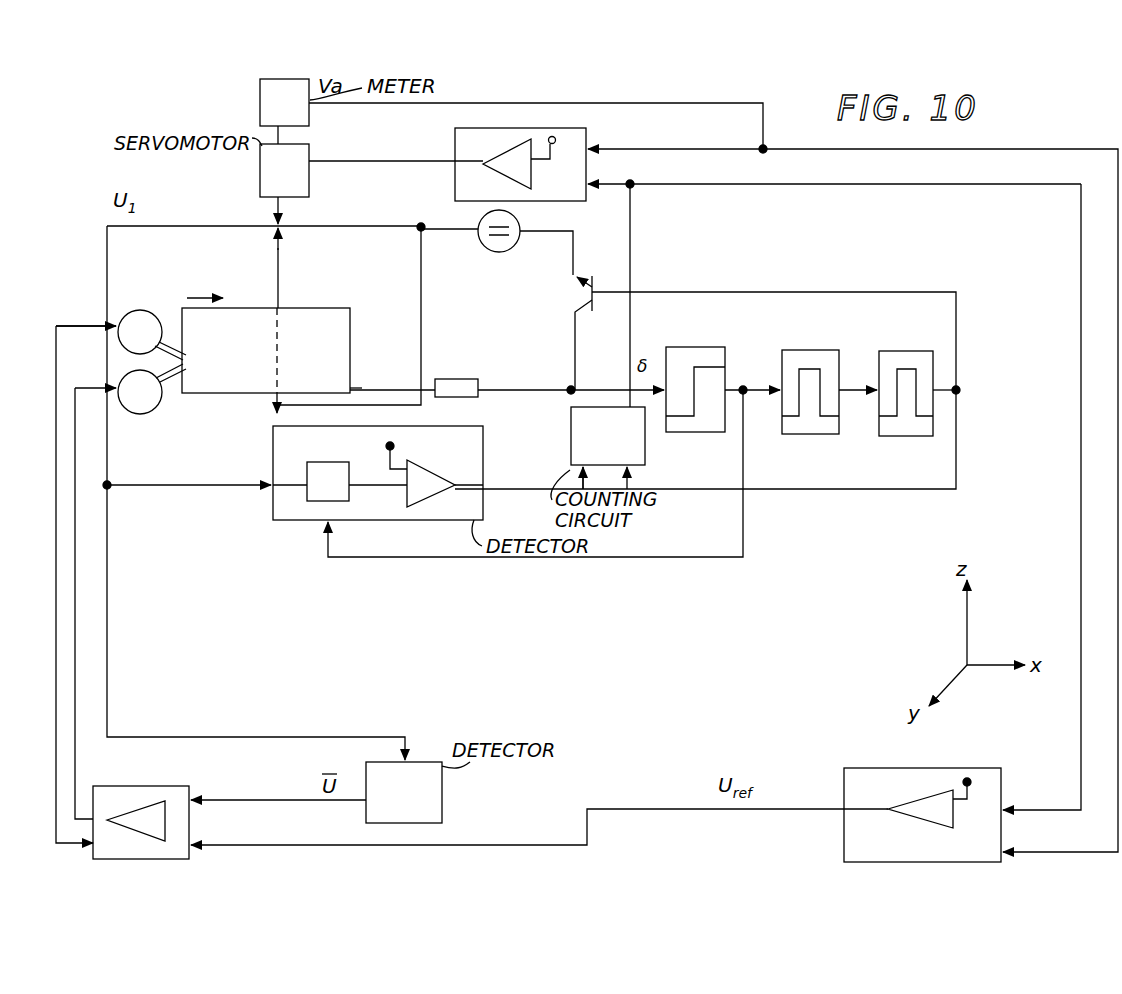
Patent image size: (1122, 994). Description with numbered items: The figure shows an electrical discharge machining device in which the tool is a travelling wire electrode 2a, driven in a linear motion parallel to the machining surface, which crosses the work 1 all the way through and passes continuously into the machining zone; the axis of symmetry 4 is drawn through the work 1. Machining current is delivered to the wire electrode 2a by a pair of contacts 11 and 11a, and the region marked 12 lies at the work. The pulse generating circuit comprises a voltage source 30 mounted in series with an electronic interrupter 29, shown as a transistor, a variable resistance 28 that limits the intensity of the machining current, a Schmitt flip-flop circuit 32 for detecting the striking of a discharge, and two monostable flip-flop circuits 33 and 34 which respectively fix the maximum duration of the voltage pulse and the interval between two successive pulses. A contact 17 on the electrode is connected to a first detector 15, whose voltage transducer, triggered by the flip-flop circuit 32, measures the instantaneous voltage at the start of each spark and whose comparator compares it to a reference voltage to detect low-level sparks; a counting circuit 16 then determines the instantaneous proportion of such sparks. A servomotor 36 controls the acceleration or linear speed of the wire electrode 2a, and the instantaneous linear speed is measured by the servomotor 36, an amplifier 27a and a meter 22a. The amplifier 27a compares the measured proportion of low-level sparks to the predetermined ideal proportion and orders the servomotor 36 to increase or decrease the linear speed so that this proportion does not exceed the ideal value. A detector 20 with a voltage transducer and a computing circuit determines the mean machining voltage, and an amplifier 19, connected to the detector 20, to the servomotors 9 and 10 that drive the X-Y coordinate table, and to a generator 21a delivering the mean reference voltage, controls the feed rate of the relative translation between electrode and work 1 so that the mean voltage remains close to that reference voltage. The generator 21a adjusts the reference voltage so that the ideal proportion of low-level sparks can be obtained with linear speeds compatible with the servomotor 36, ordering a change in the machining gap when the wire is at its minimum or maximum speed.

The meter 22a is at (284, 102).
The servomotor 36 is at (284, 170).
The contact 17 is at (272, 224).
The contact 11 is at (284, 224).
The amplifier 27a is at (462, 186).
The voltage source 30 is at (484, 246).
The electronic interrupter 29 is at (588, 290).
The travelling wire electrode 2a is at (278, 288).
The axis of symmetry 4 is at (288, 350).
The work 1 is at (350, 330).
The connection point 12 is at (350, 390).
The variable resistance 28 is at (454, 378).
The Schmitt flip-flop circuit 32 is at (688, 352).
The monostable flip-flop circuit 33 is at (804, 352).
The monostable flip-flop circuit 34 is at (892, 352).
The servomotor 9 is at (140, 332).
The servomotor 10 is at (140, 392).
The contact 11a is at (275, 404).
The counting circuit 16 is at (608, 436).
The first detector 15 is at (480, 504).
The detector 20 is at (404, 792).
The amplifier 19 is at (141, 822).
The generator 21a is at (844, 831).